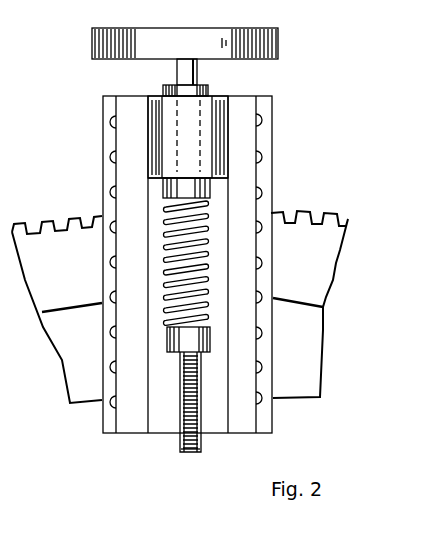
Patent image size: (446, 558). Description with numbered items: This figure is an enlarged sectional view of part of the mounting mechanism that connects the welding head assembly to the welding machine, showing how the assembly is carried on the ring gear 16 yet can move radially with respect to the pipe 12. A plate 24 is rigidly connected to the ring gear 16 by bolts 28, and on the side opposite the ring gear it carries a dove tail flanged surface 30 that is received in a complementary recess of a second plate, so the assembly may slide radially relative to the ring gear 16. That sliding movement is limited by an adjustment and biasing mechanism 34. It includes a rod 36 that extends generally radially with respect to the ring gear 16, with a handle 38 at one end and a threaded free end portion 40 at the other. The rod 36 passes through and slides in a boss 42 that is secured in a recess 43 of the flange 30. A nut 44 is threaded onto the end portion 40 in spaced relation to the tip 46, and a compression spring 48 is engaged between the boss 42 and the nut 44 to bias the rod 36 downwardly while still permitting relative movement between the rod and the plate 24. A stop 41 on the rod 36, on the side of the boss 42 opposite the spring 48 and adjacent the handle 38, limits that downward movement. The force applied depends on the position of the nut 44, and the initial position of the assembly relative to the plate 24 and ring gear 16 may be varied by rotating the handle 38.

The pipe 12 is at (193, 199).
The ring gear 16 is at (63, 235).
The plate 24 is at (272, 424).
The bolts 28 is at (266, 120).
The dove tail flanged surface 30 is at (133, 108).
The adjustment and biasing mechanism 34 is at (300, 50).
The rod 36 is at (197, 72).
The handle 38 is at (208, 28).
The threaded free end portion 40 is at (200, 407).
The stop 41 is at (162, 88).
The boss 42 is at (235, 98).
The recess 43 is at (217, 205).
The nut 44 is at (167, 337).
The tip 46 is at (185, 452).
The compression spring 48 is at (207, 245).